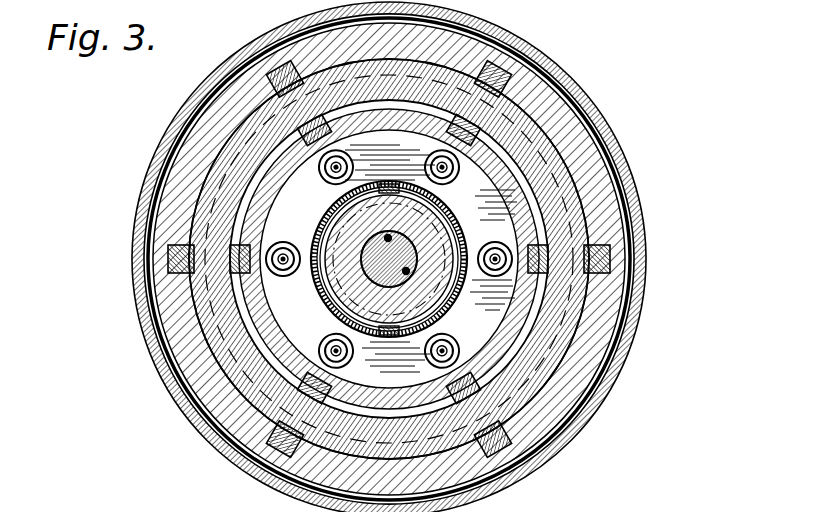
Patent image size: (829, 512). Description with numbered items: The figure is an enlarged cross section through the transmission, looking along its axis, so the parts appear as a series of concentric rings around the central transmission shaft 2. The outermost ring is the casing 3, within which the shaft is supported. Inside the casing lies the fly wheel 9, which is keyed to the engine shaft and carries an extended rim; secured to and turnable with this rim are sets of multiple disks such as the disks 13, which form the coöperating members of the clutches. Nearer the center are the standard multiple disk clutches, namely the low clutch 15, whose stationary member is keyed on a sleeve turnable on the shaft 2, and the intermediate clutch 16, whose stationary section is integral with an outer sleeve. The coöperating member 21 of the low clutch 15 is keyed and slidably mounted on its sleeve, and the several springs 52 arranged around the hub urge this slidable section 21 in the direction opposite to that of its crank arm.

The transmission shaft 2 is at (325, 287).
The casing 3 is at (647, 259).
The fly wheel 9 is at (190, 168).
The multiple disks 13 is at (545, 140).
The low clutch 15 is at (432, 242).
The intermediate clutch 16 is at (266, 209).
The coöperating member 21 is at (313, 248).
The springs 52 is at (321, 176).